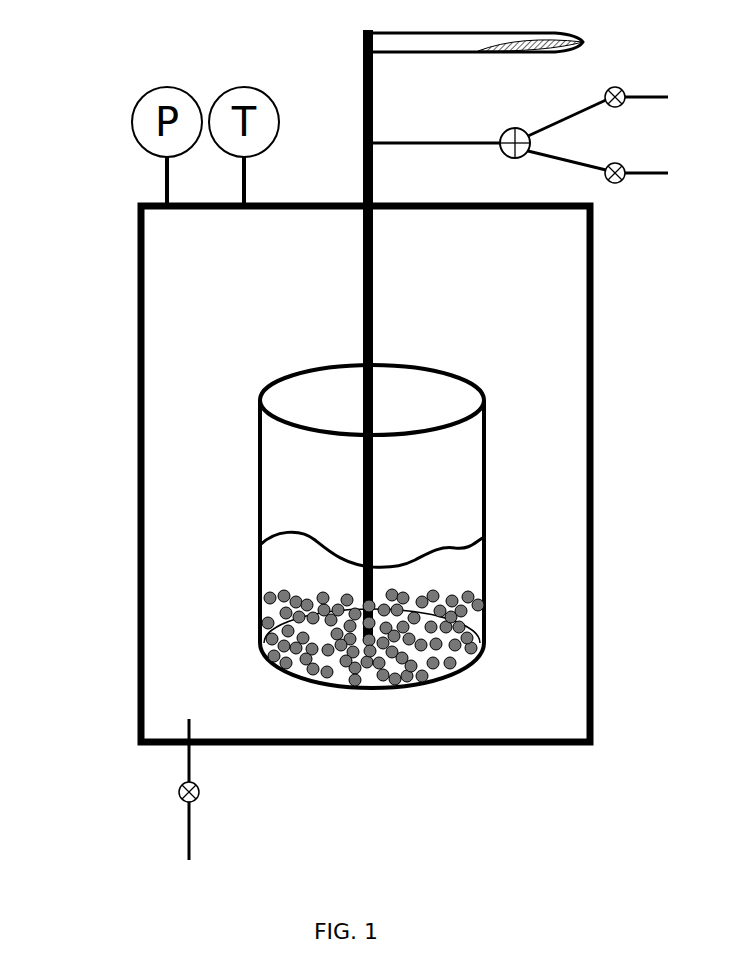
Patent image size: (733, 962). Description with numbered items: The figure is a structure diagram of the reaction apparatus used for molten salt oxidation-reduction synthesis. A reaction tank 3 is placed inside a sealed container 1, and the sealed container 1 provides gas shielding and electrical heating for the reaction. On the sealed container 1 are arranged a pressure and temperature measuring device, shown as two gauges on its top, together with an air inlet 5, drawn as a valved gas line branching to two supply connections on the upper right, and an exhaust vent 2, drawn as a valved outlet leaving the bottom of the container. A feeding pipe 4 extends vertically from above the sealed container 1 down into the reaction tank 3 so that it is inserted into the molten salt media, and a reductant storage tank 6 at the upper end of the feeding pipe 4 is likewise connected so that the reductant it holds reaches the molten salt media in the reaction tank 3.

The sealed container 1 is at (133, 518).
The exhaust vent 2 is at (200, 790).
The reaction tank 3 is at (258, 570).
The feeding pipe 4 is at (373, 294).
The air inlet 5 is at (520, 135).
The storage tank 6 is at (363, 33).